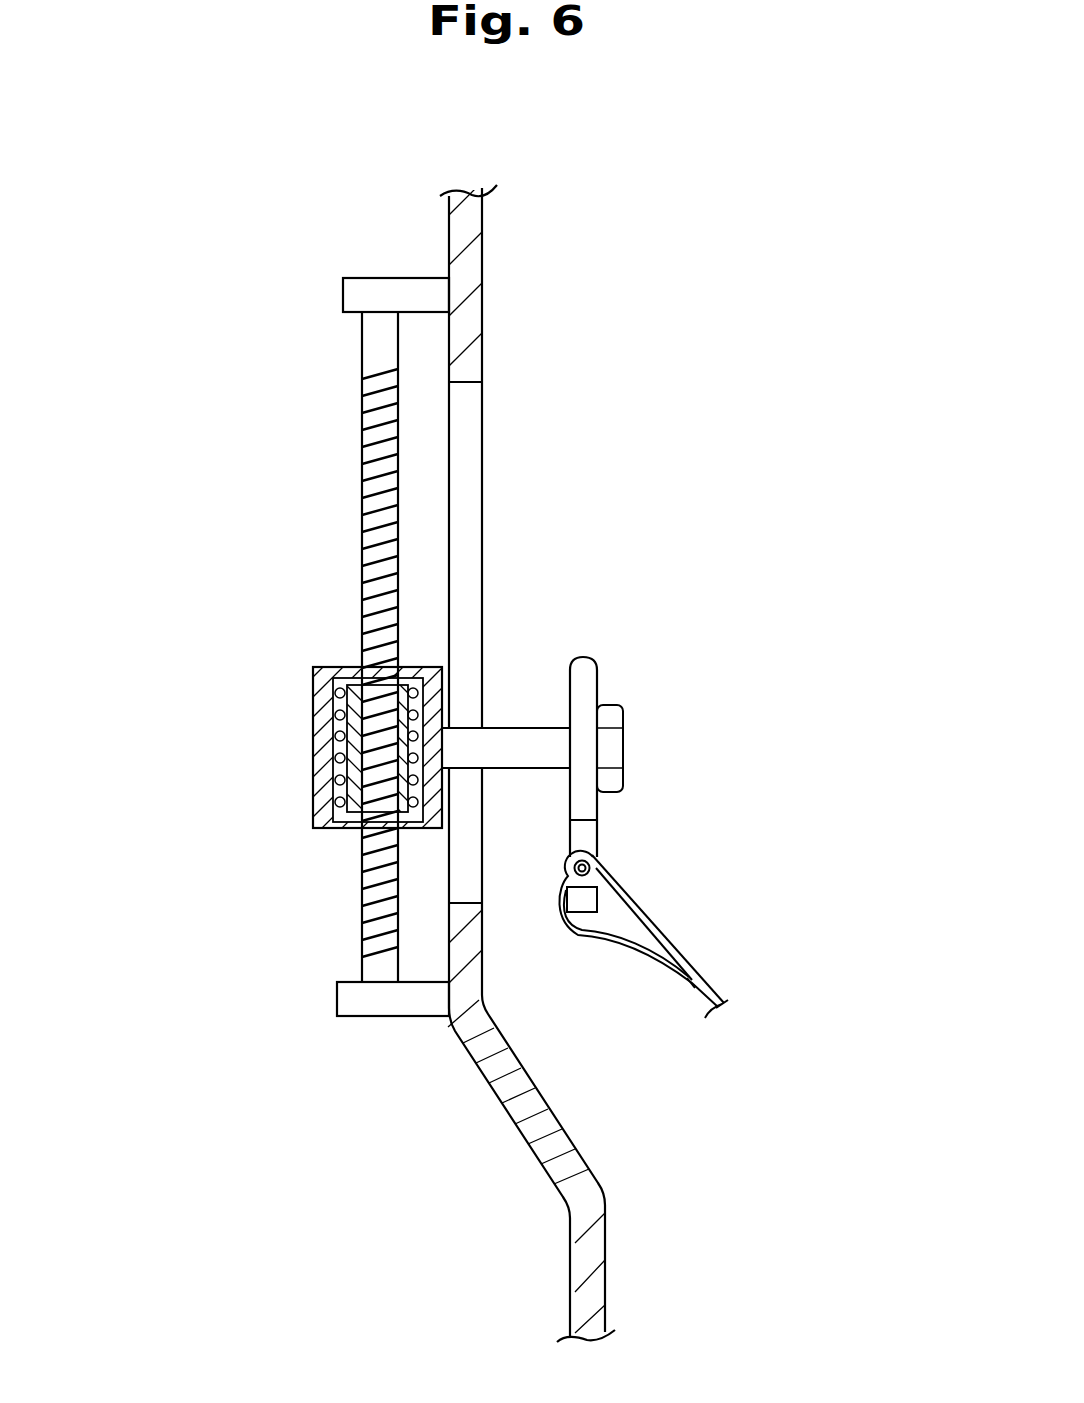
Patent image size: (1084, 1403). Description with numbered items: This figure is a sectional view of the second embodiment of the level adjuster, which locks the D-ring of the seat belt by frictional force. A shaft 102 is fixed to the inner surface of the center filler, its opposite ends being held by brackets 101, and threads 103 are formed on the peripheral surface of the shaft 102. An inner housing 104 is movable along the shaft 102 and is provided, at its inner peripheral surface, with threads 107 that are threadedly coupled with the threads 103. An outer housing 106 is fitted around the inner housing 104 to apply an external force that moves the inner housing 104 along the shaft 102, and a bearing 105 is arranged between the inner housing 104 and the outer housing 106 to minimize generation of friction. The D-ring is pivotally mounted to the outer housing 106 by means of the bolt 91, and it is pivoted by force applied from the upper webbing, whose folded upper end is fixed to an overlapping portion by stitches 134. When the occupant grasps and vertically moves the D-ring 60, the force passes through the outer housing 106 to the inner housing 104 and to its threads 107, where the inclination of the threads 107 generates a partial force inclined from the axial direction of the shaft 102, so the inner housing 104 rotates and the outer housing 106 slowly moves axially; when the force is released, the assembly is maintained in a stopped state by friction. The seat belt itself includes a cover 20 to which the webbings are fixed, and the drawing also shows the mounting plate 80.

The cover 20 is at (673, 945).
The buckle 60 is at (583, 673).
The mounting plate 80 is at (485, 257).
The bolt 91 is at (616, 716).
The brackets 101 is at (380, 278).
The shaft 102 is at (360, 338).
The threads 103 is at (360, 398).
The inner housing 104 is at (398, 704).
The bearing 105 is at (333, 829).
The outer housing 106 is at (323, 770).
The threads 107 is at (400, 678).
The stitches 134 is at (690, 978).